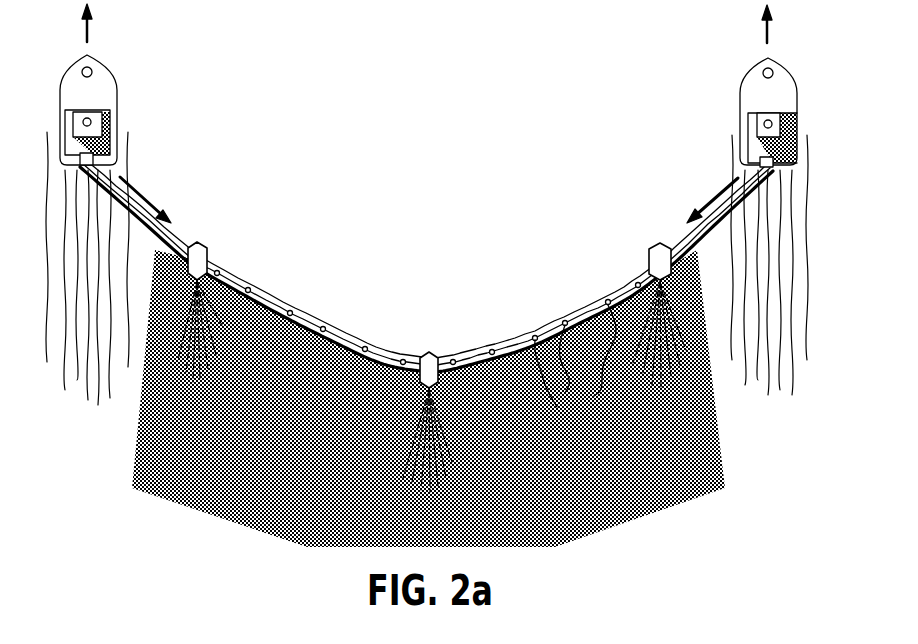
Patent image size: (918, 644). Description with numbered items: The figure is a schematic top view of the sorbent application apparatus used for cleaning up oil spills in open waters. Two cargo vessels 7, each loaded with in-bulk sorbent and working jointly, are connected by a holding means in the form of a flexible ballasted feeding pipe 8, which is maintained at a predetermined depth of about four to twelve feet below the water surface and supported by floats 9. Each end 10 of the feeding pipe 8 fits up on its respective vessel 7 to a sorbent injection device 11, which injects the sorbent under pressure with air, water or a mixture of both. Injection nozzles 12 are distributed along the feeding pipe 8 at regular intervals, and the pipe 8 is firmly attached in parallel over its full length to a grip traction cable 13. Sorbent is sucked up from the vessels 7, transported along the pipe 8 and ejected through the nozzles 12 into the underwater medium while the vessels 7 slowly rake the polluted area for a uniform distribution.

The cargo vessel 7 is at (112, 80).
The flexible ballasted feeding pipe 8 is at (305, 332).
The float 9 is at (426, 350).
The end of the pipe 10 is at (775, 170).
The sorbent injection device 11 is at (797, 163).
The injection nozzle 12 is at (575, 364).
The grip traction cable 13 is at (613, 288).